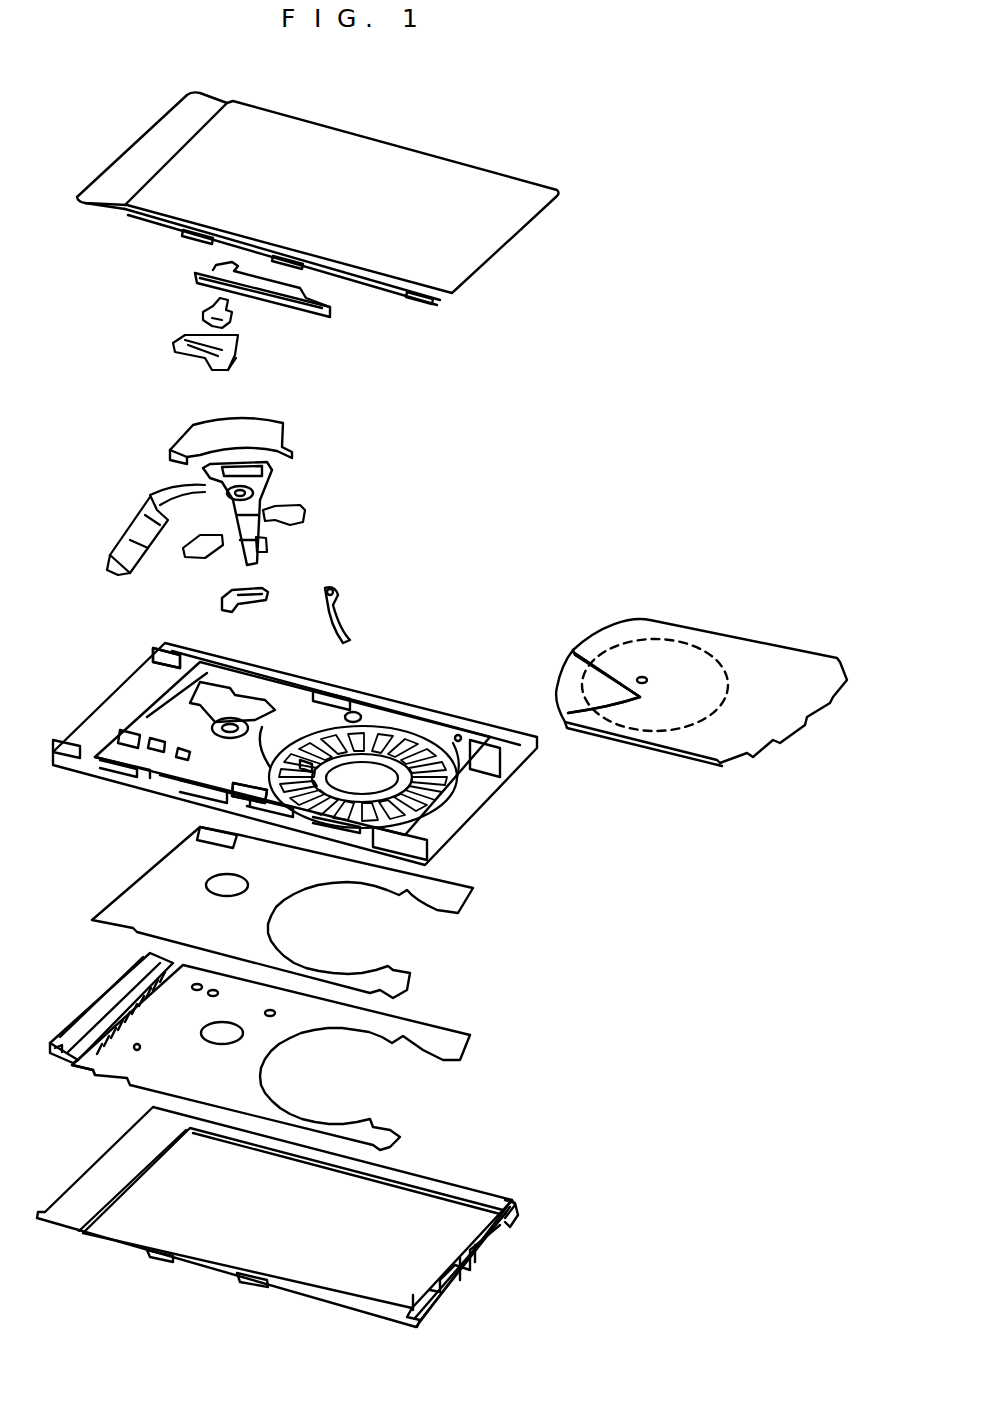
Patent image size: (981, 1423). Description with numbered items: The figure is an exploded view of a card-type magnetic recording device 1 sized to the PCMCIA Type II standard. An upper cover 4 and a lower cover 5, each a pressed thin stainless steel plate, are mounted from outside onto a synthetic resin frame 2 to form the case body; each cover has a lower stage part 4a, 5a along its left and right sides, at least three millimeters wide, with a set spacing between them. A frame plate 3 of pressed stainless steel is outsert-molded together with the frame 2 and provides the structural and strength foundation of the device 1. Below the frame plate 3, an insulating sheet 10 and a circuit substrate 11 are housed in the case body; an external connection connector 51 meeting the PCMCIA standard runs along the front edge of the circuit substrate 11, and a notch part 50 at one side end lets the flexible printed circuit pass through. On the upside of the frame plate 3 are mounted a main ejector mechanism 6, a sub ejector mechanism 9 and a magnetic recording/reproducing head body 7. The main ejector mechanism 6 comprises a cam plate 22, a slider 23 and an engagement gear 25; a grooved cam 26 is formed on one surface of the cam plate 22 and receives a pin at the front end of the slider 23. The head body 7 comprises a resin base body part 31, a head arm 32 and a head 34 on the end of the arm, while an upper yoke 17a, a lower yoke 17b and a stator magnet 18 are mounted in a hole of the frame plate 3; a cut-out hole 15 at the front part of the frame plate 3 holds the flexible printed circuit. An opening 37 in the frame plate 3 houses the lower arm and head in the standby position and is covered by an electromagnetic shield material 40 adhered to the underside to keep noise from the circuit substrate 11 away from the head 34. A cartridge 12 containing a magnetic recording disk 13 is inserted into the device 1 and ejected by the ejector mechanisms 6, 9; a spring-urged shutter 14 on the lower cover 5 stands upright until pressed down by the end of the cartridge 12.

The card-type magnetic recording device 1 is at (632, 345).
The frame 2 is at (400, 698).
The frame plate 3 is at (447, 730).
The upper cover 4 is at (500, 186).
The lower stage part 4a is at (135, 220).
The lower cover 5 is at (443, 1213).
The lower stage part 5a is at (490, 1197).
The main ejector mechanism 6 is at (352, 300).
The magnetic recording/reproducing head body 7 is at (278, 490).
The sub ejector mechanism 9 is at (350, 615).
The insulating sheet 10 is at (470, 884).
The circuit substrate 11 is at (460, 1035).
The cartridge 12 is at (752, 640).
The magnetic recording disk 13 is at (578, 675).
The shutter 14 is at (520, 1205).
The cut-out hole 15 is at (100, 772).
The upper yoke 17a is at (195, 425).
The lower yoke 17b is at (190, 690).
The stator magnet 18 is at (193, 557).
The cam plate 22 is at (238, 358).
The slider 23 is at (310, 318).
The engagement gear 25 is at (203, 310).
The grooved cam 26 is at (180, 340).
The resin base body part 31 is at (205, 486).
The head arm 32 is at (285, 520).
The magnetic recording/reproducing head 34 is at (262, 548).
The opening 37 is at (230, 792).
The electromagnetic shield material 40 is at (190, 838).
The notch part 50 is at (103, 1082).
The external connection connector 51 is at (110, 995).